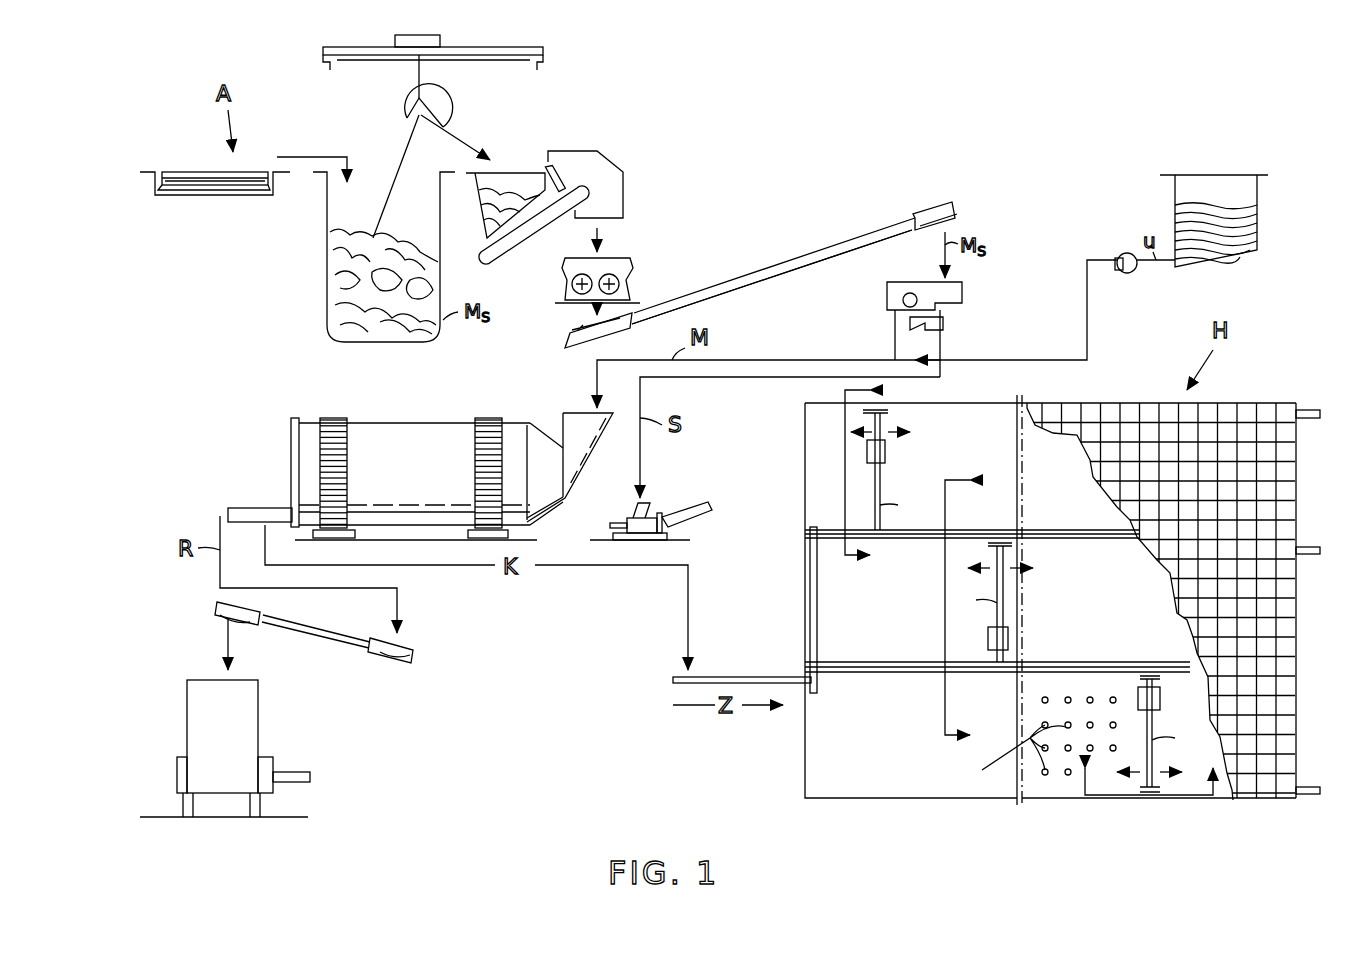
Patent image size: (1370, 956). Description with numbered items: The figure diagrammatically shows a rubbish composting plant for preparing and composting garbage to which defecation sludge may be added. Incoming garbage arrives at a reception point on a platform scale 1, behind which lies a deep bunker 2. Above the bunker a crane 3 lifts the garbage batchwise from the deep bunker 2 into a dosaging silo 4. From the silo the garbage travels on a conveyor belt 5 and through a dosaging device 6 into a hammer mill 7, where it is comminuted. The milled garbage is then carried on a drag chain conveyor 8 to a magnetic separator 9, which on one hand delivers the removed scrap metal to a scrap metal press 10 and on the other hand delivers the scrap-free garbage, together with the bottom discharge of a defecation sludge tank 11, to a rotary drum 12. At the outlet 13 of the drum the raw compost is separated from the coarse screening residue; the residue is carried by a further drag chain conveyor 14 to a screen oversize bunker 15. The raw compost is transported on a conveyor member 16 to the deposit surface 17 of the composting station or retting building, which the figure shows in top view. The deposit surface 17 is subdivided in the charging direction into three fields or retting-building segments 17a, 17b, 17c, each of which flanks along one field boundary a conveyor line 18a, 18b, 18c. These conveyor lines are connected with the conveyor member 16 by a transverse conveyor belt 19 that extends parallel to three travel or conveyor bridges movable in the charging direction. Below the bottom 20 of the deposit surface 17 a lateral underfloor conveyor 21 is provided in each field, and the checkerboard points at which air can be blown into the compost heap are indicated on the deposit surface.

The platform scale 1 is at (185, 193).
The deep bunker 2 is at (335, 220).
The crane 3 is at (440, 108).
The dosaging silo 4 is at (513, 183).
The conveyor belt 5 is at (517, 245).
The dosaging device 6 is at (607, 170).
The hammer mill 7 is at (612, 263).
The drag chain conveyor 8 is at (803, 255).
The magnetic separator 9 is at (962, 292).
The scrap metal press 10 is at (680, 520).
The defecation sludge tank 11 is at (1257, 242).
The rotary drum 12 is at (407, 433).
The outlet 13 is at (258, 513).
The conveyor 14 is at (332, 633).
The screen oversize bunker 15 is at (250, 725).
The conveyor member 16 is at (743, 677).
The deposit surface 17 is at (1066, 608).
The retting-building segment 17a is at (1068, 496).
The retting-building segment 17b is at (1112, 616).
The retting-building segment 17c is at (888, 708).
The conveyor line 18a is at (960, 532).
The conveyor line 18b is at (883, 660).
The conveyor line 18c is at (953, 676).
The transverse conveyor belt 19 is at (817, 603).
The bottom 20 is at (1242, 499).
The lateral underfloor conveyor 21 is at (1310, 420).